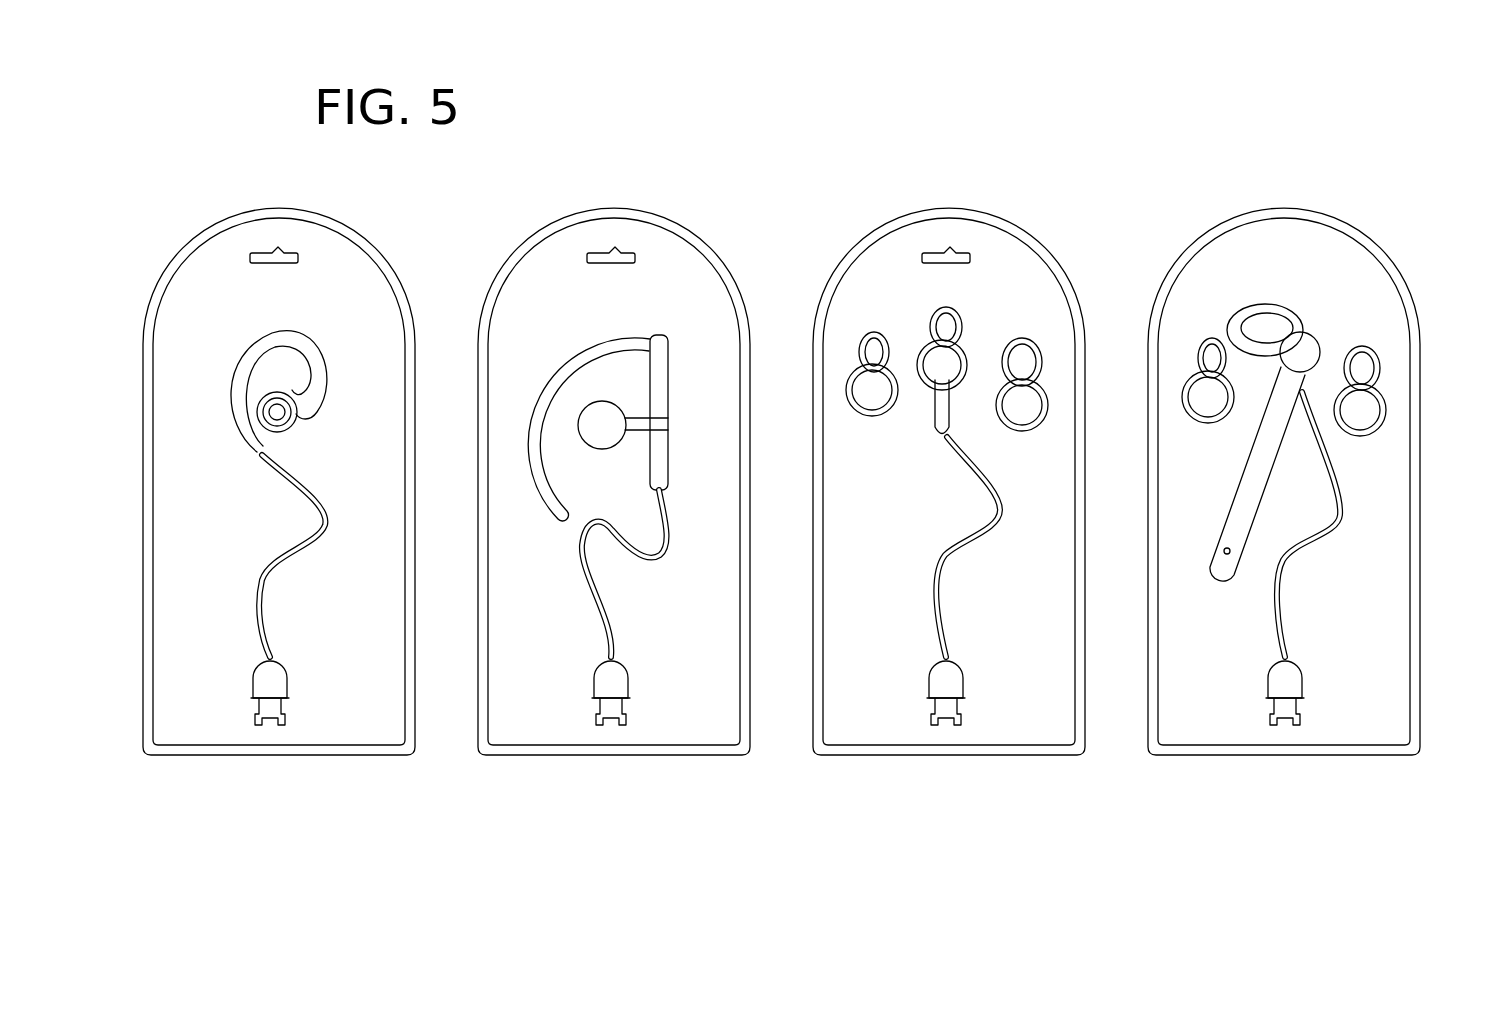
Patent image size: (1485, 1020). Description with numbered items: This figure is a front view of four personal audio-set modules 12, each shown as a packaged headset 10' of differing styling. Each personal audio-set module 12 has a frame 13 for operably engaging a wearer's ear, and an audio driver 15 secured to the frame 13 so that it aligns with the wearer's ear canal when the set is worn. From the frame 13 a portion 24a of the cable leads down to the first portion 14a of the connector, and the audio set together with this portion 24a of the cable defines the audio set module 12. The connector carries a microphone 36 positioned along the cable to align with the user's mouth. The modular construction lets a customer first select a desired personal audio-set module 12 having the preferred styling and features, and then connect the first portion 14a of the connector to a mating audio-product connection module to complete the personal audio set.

The headset 10' is at (799, 365).
The personal audio-set module 12 is at (343, 303).
The frame 13 is at (316, 378).
The audio driver 15 is at (295, 425).
The portion of the cable 24a is at (258, 592).
The microphone 36 is at (252, 685).
The first portion of the connector 14a is at (290, 685).